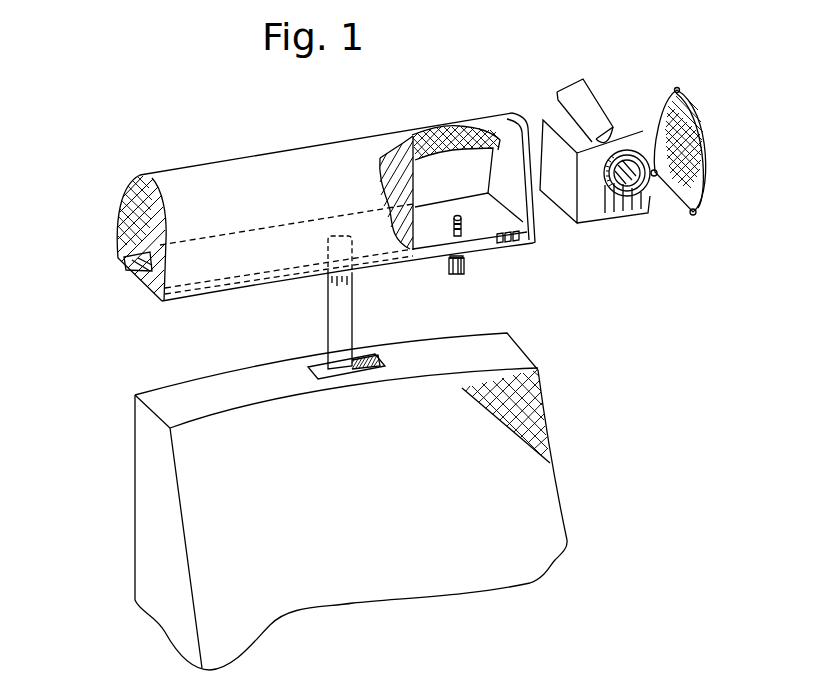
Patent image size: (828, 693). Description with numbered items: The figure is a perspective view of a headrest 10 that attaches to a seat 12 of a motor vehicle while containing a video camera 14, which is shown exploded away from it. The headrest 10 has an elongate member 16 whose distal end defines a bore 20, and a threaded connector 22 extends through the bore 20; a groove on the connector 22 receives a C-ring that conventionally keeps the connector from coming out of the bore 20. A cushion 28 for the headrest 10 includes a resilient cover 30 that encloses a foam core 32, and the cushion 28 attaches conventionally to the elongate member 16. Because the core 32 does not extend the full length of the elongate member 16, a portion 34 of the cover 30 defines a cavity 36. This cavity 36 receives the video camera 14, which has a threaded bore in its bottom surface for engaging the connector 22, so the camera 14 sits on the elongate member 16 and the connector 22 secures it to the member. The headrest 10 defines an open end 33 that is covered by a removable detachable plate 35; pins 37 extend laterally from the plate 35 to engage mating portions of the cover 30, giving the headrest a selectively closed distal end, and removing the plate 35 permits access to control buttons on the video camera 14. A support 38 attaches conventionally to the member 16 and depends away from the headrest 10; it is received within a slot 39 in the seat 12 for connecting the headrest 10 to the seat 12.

The headrest 10 is at (105, 148).
The seat 12 is at (327, 491).
The video camera 14 is at (600, 120).
The elongate member 16 is at (200, 275).
The bore 20 is at (463, 228).
The threaded connector 22 is at (445, 269).
The cushion 28 is at (263, 160).
The resilient cover 30 is at (128, 235).
The foam core 32 is at (138, 174).
The open end 33 is at (535, 115).
The portion of the cover 34 is at (440, 168).
The removable detachable plate 35 is at (706, 147).
The cavity 36 is at (430, 138).
The pins 37 is at (692, 216).
The support 38 is at (343, 305).
The slot 39 is at (372, 363).